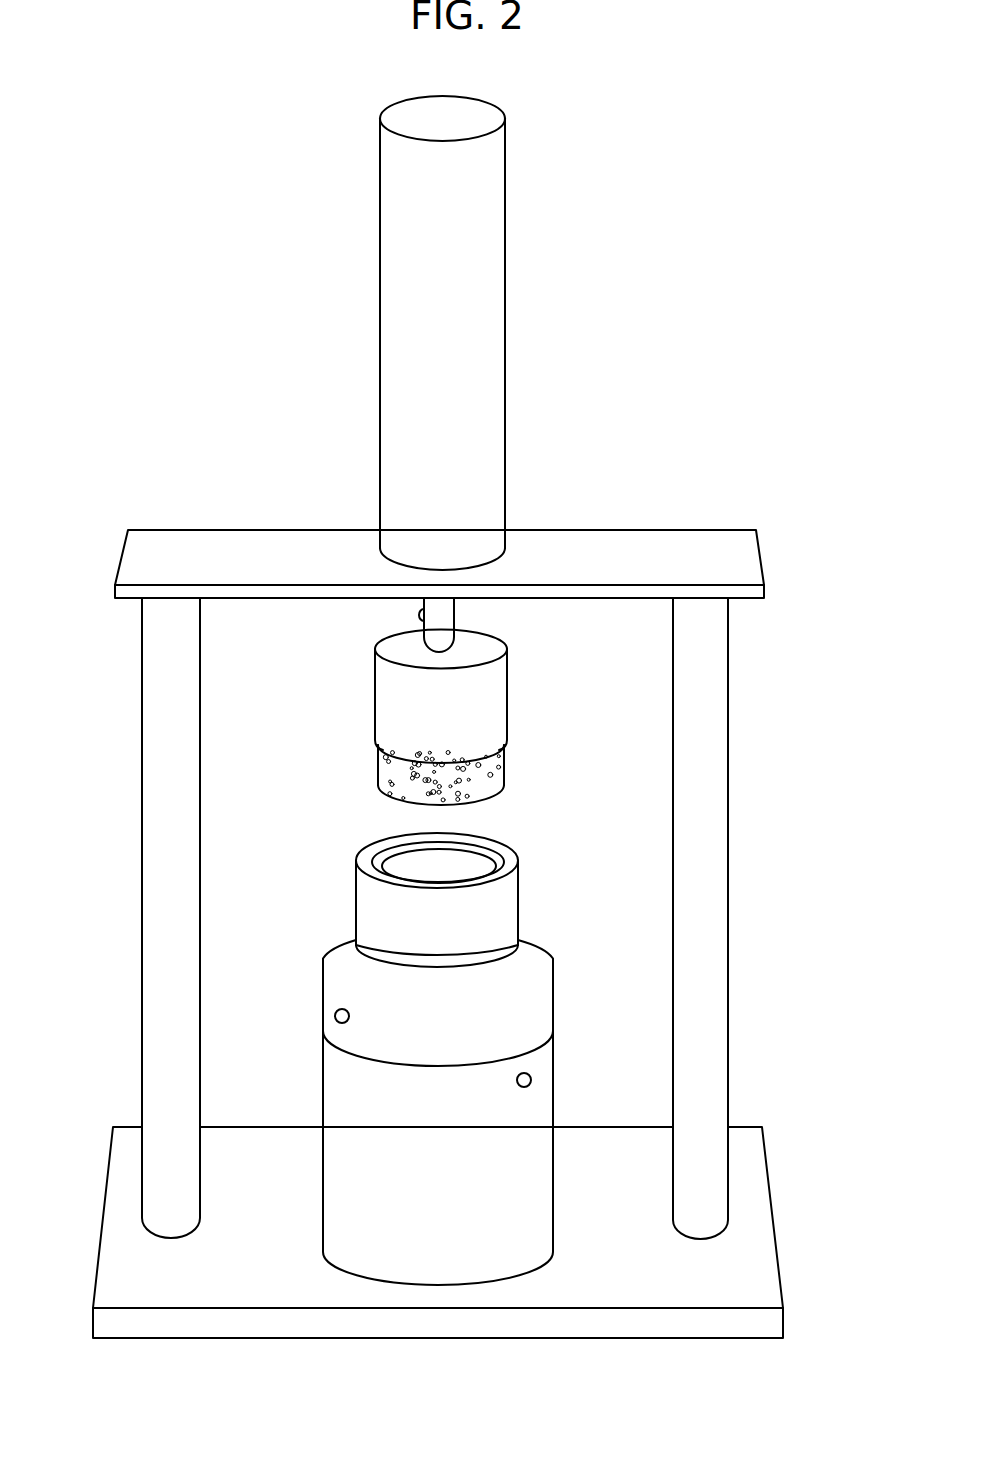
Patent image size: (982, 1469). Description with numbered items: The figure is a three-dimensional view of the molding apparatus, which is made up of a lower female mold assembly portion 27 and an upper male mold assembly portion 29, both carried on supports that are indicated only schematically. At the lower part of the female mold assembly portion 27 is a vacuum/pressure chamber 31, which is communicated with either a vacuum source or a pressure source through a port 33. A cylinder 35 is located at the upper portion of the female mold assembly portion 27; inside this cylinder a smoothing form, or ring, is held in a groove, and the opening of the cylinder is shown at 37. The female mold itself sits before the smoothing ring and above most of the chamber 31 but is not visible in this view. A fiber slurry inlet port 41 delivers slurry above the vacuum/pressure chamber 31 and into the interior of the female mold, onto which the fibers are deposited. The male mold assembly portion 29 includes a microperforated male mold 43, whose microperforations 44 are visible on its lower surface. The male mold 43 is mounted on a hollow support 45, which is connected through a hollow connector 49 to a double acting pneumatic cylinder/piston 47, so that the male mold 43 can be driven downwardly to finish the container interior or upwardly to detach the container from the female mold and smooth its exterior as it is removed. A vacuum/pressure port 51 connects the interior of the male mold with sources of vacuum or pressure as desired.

The female mold assembly portion 27 is at (436, 1049).
The male mold assembly portion 29 is at (420, 733).
The vacuum/pressure chamber 31 is at (436, 1112).
The port 33 is at (532, 1079).
The cylinder 35 is at (471, 890).
The die cavity 37 is at (468, 855).
The fiber slurry inlet port 41 is at (334, 1018).
The microperforated male mold 43 is at (404, 790).
The microperforations 44 is at (388, 797).
The hollow support 45 is at (507, 697).
The double acting pneumatic cylinder/piston 47 is at (506, 357).
The hollow connector 49 is at (440, 625).
The vacuum/pressure port 51 is at (421, 615).